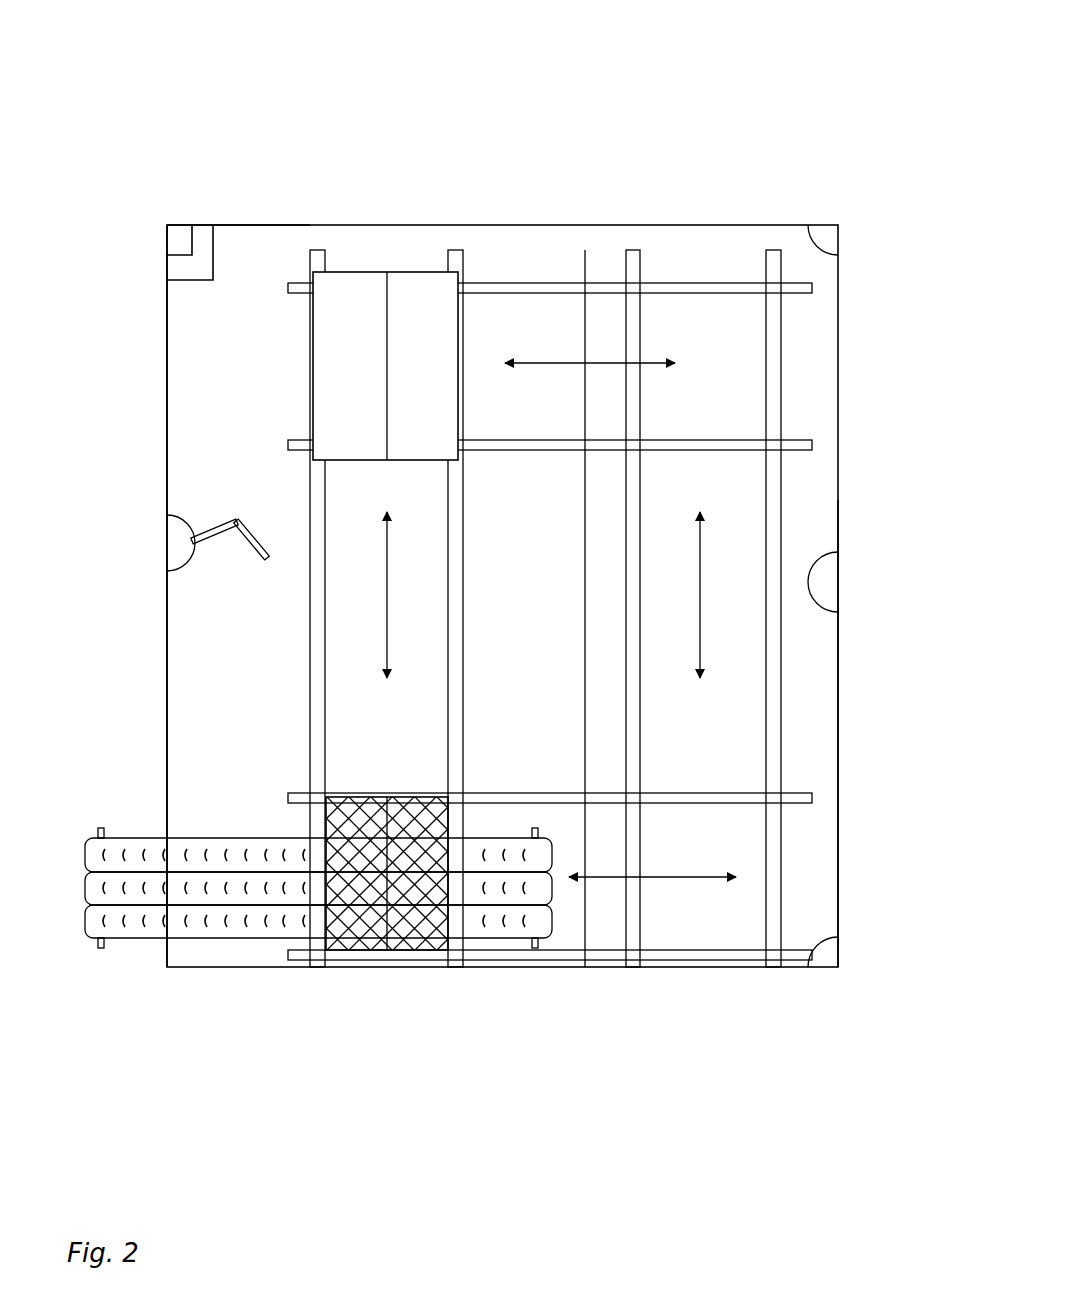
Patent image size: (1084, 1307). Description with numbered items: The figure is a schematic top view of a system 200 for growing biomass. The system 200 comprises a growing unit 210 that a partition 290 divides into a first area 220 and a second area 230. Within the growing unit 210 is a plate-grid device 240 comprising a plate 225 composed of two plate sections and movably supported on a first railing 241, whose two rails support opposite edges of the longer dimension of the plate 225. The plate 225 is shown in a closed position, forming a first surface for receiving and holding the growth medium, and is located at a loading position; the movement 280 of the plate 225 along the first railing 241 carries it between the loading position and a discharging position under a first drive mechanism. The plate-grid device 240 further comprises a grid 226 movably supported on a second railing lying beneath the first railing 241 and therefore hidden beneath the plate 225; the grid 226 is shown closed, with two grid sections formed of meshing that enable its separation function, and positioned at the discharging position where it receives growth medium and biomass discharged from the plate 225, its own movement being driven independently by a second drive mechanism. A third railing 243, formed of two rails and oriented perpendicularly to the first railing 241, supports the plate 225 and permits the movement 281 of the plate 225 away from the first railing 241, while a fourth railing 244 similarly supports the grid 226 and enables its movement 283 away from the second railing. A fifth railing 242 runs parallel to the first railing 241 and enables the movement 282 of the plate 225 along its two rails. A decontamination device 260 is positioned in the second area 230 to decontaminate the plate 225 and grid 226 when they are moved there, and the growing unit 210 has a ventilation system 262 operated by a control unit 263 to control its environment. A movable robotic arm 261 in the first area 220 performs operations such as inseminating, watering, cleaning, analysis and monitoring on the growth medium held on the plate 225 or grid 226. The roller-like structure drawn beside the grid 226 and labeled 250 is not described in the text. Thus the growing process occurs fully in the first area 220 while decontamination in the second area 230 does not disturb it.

The system for growing biomass 200 is at (203, 65).
The growing unit 210 is at (162, 436).
The first area 220 is at (187, 340).
The plate 225 is at (328, 378).
The grid 226 is at (338, 915).
The second area 230 is at (812, 650).
The plate-grid device 240 is at (275, 542).
The first railing 241 is at (457, 727).
The fifth railing 242 is at (765, 258).
The third railing 243 is at (805, 289).
The fourth railing 244 is at (803, 801).
The roller conveyor 250 is at (135, 900).
The decontamination device 260 is at (830, 237).
The movable robotic arm 261 is at (172, 548).
The ventilation system 262 is at (216, 250).
The control unit 263 is at (182, 242).
The movement of the plate along the first railing 280 is at (412, 595).
The movement of the plate along the third railing 281 is at (590, 340).
The movement of the plate along the fifth railing 282 is at (674, 595).
The movement of the grid along the fourth railing 283 is at (652, 899).
The partition 290 is at (585, 250).